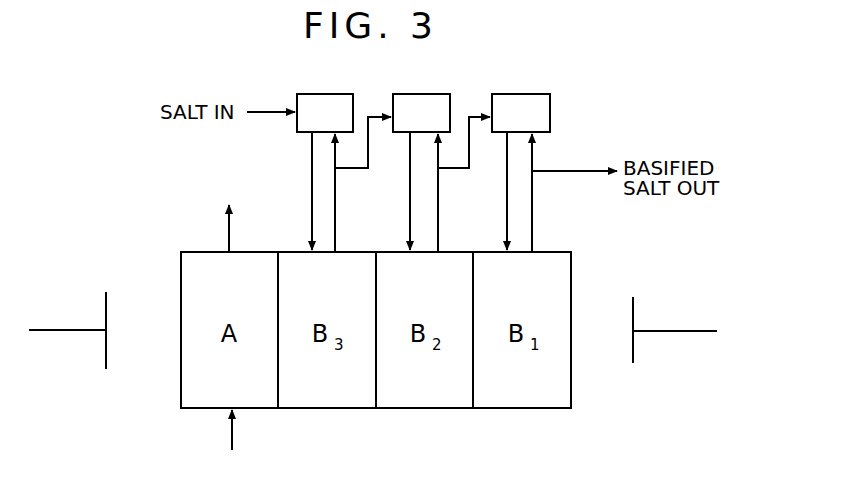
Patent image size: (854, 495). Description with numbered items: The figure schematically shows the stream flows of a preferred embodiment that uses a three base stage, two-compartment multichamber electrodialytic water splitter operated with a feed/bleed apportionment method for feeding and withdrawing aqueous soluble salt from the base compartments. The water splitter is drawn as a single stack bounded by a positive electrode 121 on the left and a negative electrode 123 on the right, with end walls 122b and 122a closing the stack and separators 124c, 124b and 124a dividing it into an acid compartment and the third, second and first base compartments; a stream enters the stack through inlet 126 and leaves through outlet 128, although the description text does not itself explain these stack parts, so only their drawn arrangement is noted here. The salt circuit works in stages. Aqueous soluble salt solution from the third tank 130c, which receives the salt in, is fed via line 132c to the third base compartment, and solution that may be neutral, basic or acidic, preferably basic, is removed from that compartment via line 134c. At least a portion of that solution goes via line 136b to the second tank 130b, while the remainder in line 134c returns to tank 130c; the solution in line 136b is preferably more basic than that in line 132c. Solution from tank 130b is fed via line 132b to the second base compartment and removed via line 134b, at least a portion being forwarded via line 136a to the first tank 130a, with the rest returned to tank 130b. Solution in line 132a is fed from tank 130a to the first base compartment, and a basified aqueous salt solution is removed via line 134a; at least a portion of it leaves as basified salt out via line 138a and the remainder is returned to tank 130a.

The anode (positive electrode) 121 is at (80, 333).
The cathode (negative electrode) 123 is at (672, 333).
The end wall of electrolytic cell 122a is at (571, 390).
The end wall of electrolytic cell 122b is at (181, 390).
The separator between compartments 124a is at (473, 383).
The separator between compartments 124b is at (376, 383).
The separator between compartments 124c is at (278, 383).
The inlet to compartment A 126 is at (232, 430).
The outlet from compartment A 128 is at (227, 237).
The tank 130a is at (528, 94).
The tank 130b is at (425, 94).
The tank 130c is at (327, 94).
The line 132a is at (507, 237).
The line 132b is at (410, 237).
The line 132c is at (312, 198).
The line 134a is at (532, 230).
The line 134b is at (436, 230).
The line 134c is at (336, 233).
The line 136a is at (469, 147).
The line 136b is at (368, 147).
The line 138a is at (575, 171).